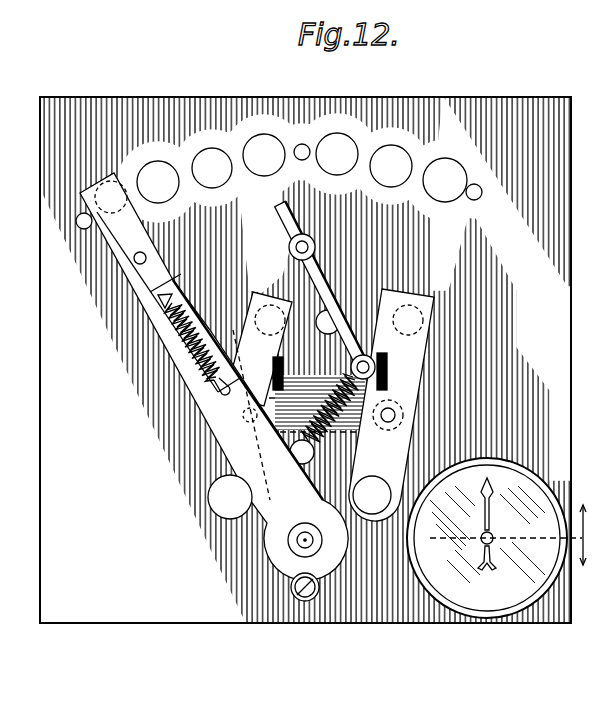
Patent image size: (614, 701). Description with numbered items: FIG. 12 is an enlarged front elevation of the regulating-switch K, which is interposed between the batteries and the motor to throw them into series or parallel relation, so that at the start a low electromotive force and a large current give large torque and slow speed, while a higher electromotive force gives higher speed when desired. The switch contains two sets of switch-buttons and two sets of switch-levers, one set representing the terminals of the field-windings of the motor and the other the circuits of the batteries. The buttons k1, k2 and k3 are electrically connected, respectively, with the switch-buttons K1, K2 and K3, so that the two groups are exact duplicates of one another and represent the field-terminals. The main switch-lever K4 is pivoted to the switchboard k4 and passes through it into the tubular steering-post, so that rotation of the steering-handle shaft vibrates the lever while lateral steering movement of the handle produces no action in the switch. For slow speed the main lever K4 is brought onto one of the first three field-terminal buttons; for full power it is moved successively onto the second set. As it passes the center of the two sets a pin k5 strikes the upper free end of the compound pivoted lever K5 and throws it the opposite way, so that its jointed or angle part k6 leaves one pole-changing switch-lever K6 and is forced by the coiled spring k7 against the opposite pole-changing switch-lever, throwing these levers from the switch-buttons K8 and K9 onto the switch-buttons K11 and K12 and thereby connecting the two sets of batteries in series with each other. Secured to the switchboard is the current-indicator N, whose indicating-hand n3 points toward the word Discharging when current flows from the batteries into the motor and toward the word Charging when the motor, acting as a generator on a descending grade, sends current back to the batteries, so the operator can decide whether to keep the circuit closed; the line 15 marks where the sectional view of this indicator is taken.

The regulating-switch K is at (305, 360).
The switch-button k1 is at (158, 182).
The switch-button k2 is at (212, 168).
The switch-button k3 is at (264, 155).
The switch-button K1 is at (337, 154).
The switch-button K2 is at (391, 166).
The switch-button K3 is at (445, 180).
The main switch-lever K4 is at (207, 408).
The switchboard k4 is at (300, 541).
The pin k5 is at (135, 262).
The jointed or angle part k6 is at (351, 367).
The coiled spring k7 is at (176, 313).
The compound pivoted lever K5 is at (306, 270).
The pole-changing switch-lever K6 is at (375, 392).
The switch-button K8 is at (430, 292).
The switch-button K9 is at (312, 250).
The switch-button K11 is at (330, 318).
The switch-button K12 is at (288, 278).
The ammeter N is at (283, 309).
The indicating-hand n3 is at (484, 522).
The section line 15 is at (518, 535).